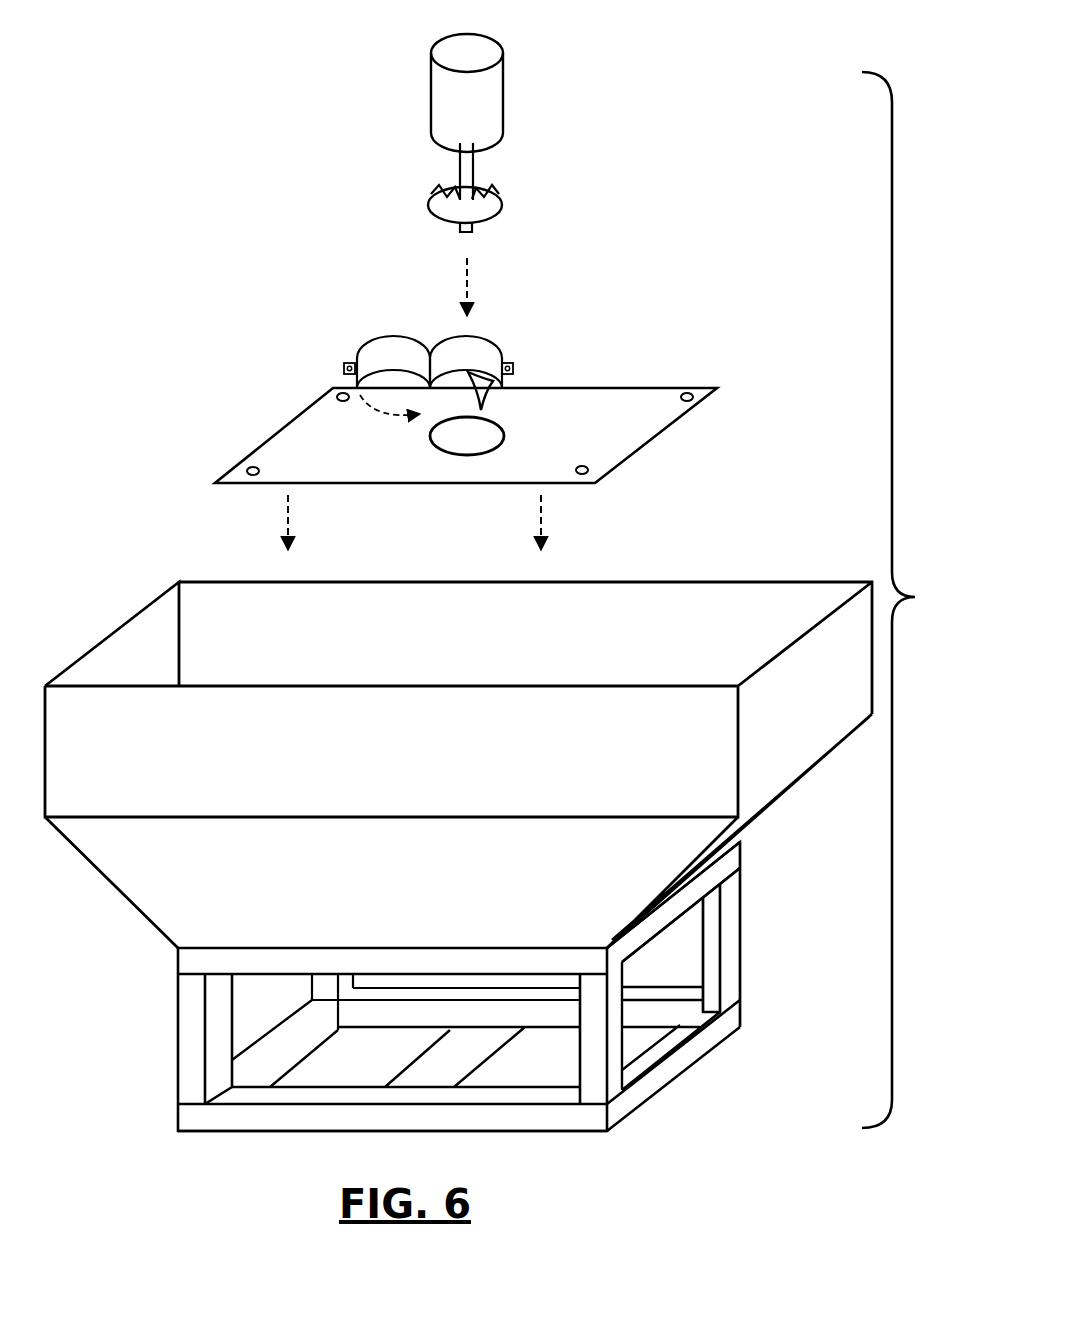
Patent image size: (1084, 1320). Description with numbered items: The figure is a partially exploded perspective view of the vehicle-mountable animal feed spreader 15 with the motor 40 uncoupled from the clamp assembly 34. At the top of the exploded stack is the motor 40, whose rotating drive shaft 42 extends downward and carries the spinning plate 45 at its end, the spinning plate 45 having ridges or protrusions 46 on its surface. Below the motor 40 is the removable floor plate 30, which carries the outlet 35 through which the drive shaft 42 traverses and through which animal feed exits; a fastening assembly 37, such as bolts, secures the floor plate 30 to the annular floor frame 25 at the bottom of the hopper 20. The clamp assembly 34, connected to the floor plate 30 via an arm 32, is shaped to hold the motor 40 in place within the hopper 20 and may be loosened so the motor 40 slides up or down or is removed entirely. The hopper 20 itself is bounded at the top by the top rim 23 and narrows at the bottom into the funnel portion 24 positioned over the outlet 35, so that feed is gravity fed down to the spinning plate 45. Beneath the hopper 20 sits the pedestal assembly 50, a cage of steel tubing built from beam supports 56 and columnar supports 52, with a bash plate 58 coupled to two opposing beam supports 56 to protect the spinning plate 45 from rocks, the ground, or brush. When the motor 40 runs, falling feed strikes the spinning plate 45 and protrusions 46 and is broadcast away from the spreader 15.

The vehicle-mountable spreader 15 is at (918, 597).
The hopper 20 is at (722, 602).
The top rim 23 is at (118, 623).
The funnel portion 24 is at (148, 888).
The annular floor frame 25 is at (705, 888).
The floor plate 30 is at (320, 428).
The arm 32 is at (490, 393).
The clamp assembly 34 is at (370, 352).
The outlet 35 is at (500, 436).
The fastening assembly 37 is at (250, 468).
The motor 40 is at (490, 112).
The drive shaft 42 is at (465, 172).
The spinning plate 45 is at (448, 213).
The protrusions 46 is at (497, 192).
The pedestal assembly 50 is at (145, 1113).
The columnar supports 52 is at (735, 962).
The beam supports 56 is at (243, 1118).
The bash plate 58 is at (487, 1050).